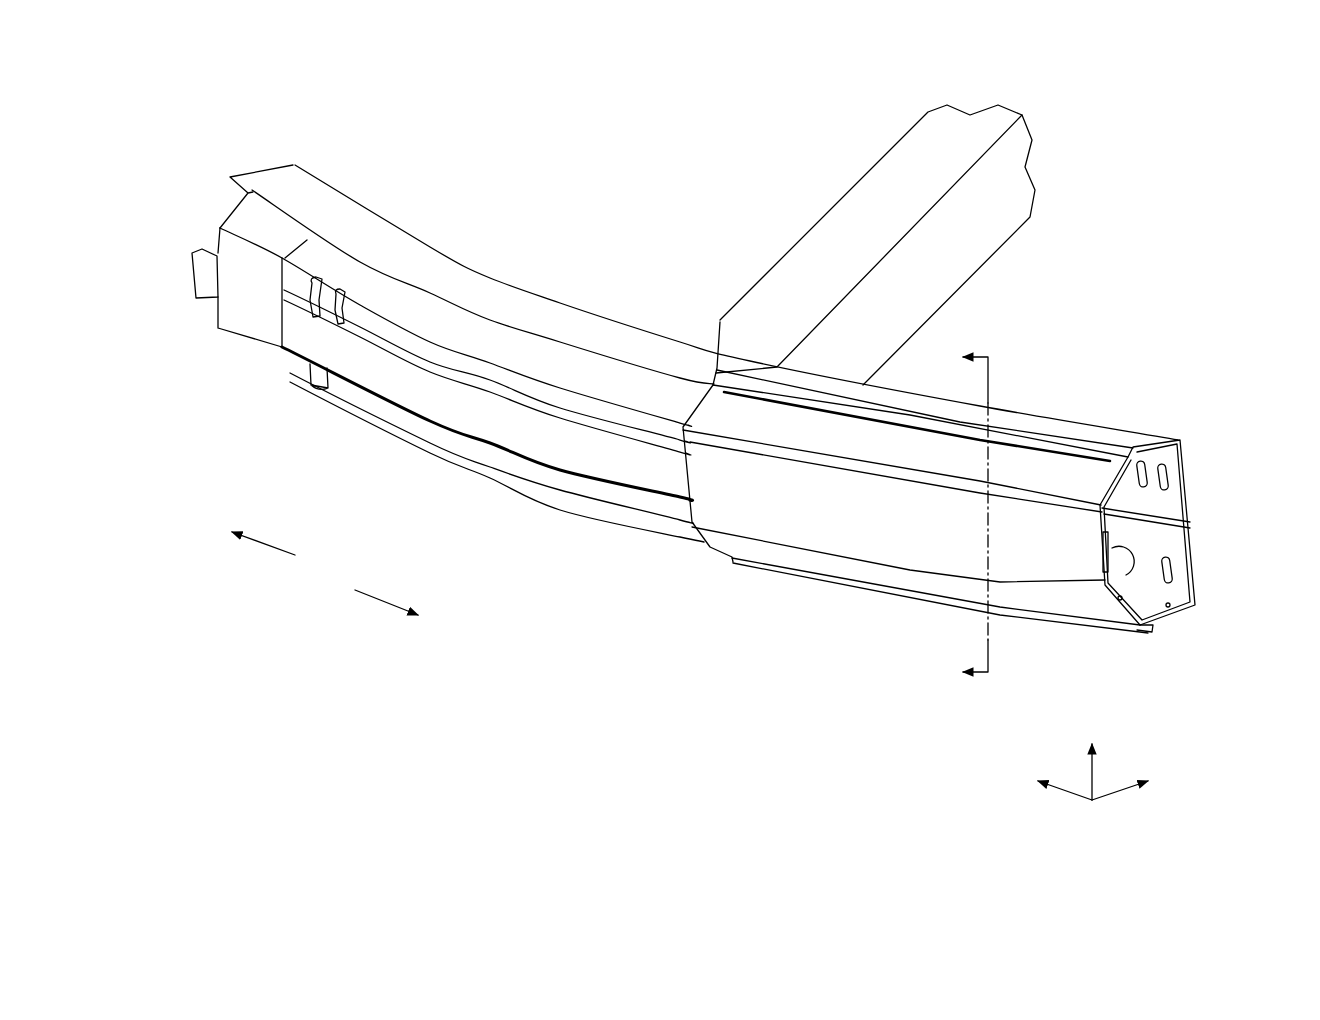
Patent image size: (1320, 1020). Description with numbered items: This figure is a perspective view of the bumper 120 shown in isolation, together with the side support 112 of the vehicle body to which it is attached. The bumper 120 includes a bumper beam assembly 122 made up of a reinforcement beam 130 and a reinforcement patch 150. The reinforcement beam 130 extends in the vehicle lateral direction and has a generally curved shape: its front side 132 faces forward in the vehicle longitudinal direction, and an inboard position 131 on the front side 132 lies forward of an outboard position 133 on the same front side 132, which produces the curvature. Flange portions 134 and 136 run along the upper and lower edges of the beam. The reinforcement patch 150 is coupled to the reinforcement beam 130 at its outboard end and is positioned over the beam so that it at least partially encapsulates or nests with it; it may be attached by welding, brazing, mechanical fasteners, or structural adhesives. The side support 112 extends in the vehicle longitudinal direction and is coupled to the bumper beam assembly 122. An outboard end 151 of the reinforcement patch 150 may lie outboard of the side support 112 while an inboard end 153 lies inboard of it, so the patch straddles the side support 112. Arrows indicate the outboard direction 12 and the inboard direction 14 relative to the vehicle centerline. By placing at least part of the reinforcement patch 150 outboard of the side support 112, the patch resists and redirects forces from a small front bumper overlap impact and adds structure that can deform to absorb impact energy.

The outboard direction 12 is at (370, 592).
The inboard direction 14 is at (268, 545).
The side support 112 is at (800, 214).
The bumper 120 is at (522, 142).
The bumper beam assembly 122 is at (585, 164).
The reinforcement beam 130 is at (431, 216).
The inboard position 131 is at (210, 300).
The front side 132 is at (292, 342).
The outboard position 133 is at (654, 490).
The upper flange 134 is at (587, 329).
The lower flange 136 is at (575, 508).
The reinforcement patch 150 is at (839, 596).
The outboard end 151 is at (1194, 472).
The inboard end 153 is at (714, 360).